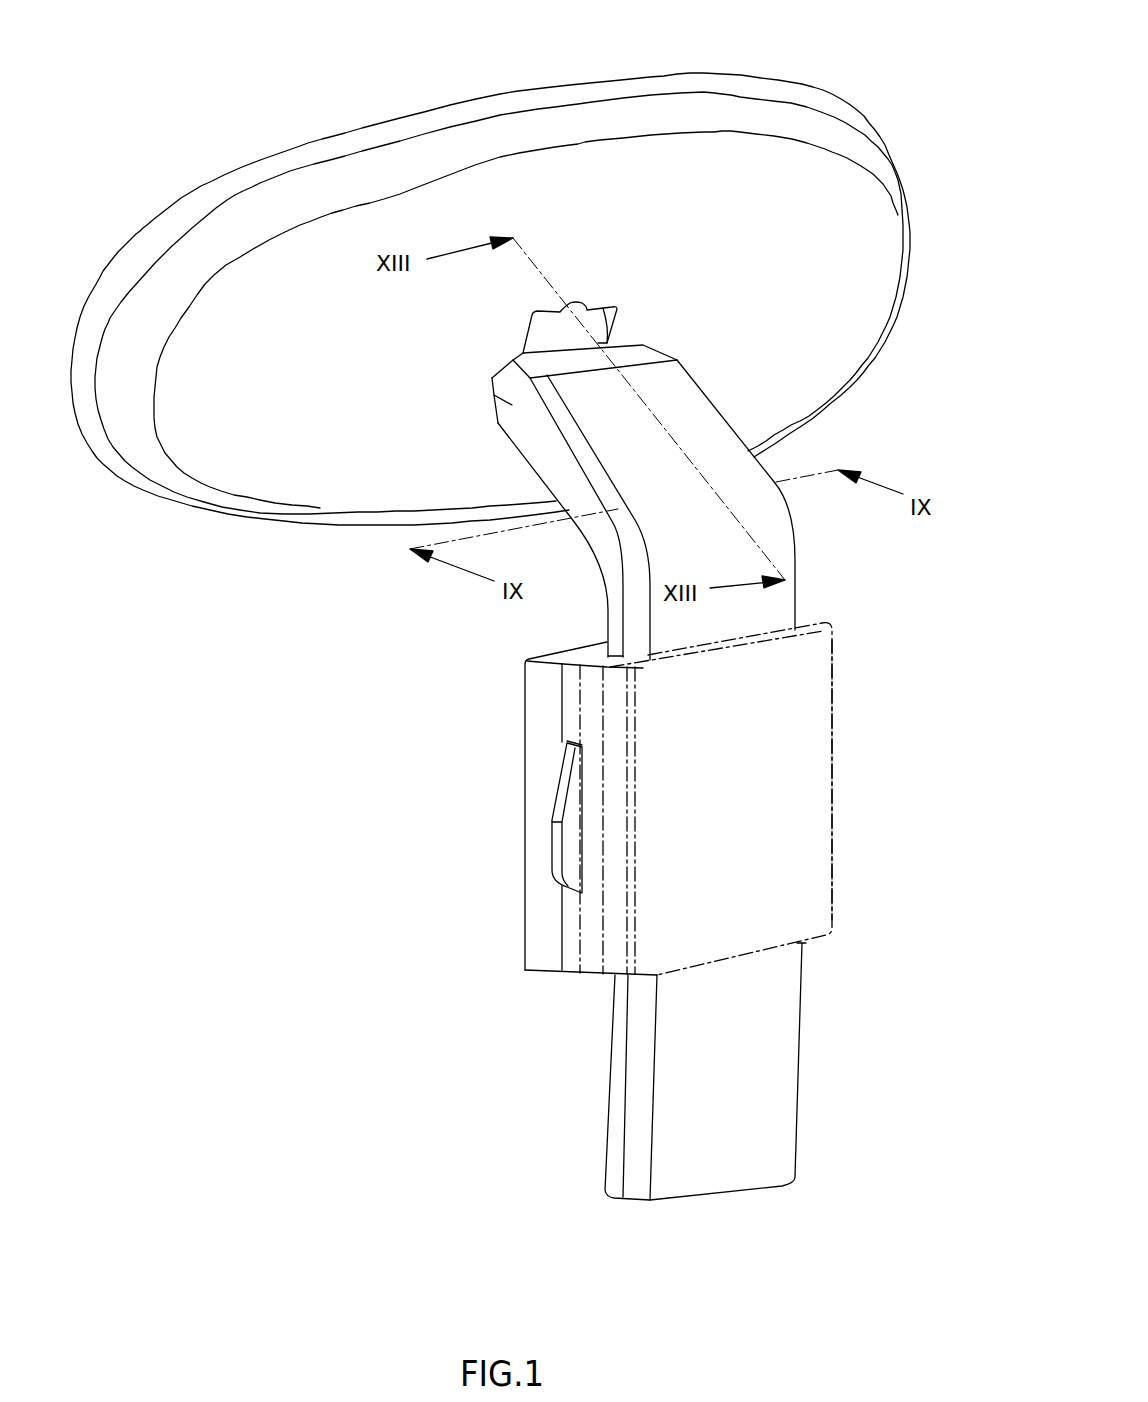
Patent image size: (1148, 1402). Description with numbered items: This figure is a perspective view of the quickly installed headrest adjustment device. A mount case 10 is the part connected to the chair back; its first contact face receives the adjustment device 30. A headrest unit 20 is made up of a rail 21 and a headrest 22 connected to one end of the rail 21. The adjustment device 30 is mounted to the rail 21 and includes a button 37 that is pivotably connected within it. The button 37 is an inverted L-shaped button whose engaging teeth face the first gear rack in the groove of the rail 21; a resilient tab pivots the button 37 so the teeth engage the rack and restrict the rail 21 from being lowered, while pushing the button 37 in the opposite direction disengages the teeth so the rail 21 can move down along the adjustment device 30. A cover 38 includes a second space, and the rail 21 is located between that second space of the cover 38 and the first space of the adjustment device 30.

The mount case 10 is at (535, 773).
The headrest unit 20 is at (345, 599).
The rail 21 is at (787, 1018).
The headrest 22 is at (315, 138).
The adjustment device 30 is at (563, 937).
The button 37 is at (561, 838).
The cover 38 is at (813, 767).